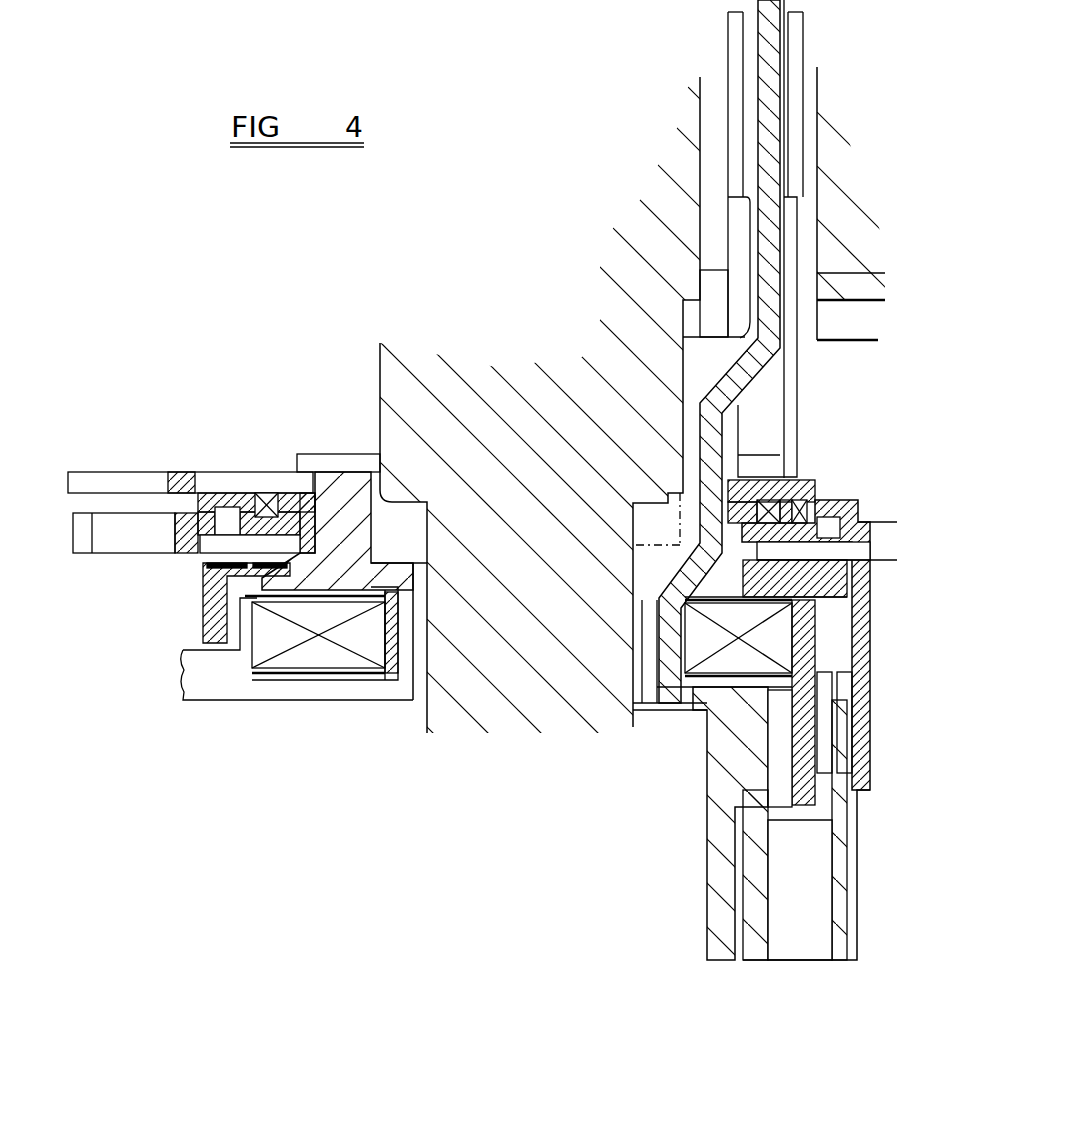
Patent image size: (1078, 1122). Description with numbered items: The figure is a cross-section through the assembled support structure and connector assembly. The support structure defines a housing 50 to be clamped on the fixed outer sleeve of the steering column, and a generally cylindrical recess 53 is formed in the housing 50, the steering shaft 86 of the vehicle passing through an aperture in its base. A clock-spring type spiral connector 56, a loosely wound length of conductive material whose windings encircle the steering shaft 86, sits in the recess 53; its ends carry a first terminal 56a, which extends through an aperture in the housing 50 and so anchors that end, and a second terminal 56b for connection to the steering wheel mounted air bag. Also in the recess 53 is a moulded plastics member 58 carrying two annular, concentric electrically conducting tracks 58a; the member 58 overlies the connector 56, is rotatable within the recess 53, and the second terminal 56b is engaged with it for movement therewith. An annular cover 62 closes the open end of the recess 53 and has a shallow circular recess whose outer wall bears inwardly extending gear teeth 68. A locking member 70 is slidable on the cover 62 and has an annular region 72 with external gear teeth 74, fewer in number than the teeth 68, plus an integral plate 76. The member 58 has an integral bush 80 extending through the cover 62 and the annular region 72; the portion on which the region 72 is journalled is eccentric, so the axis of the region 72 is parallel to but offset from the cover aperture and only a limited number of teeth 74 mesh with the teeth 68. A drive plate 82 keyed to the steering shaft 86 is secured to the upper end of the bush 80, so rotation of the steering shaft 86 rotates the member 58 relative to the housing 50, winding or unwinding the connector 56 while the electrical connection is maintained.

The housing 50 is at (720, 770).
The recess 53 is at (658, 705).
The spiral connector 56 is at (305, 657).
The first terminal 56a is at (849, 816).
The second terminal 56b is at (797, 97).
The moulded plastics member 58 is at (257, 583).
The electrically conducting tracks 58a is at (267, 565).
The annular cover 62 is at (853, 530).
The gear teeth 68 is at (817, 487).
The locking member 70 is at (797, 462).
The annular region 72 is at (290, 492).
The gear teeth 74 is at (770, 503).
The plate 76 is at (802, 510).
The bush 80 is at (343, 488).
The drive plate 82 is at (360, 463).
The steering shaft 86 is at (512, 445).